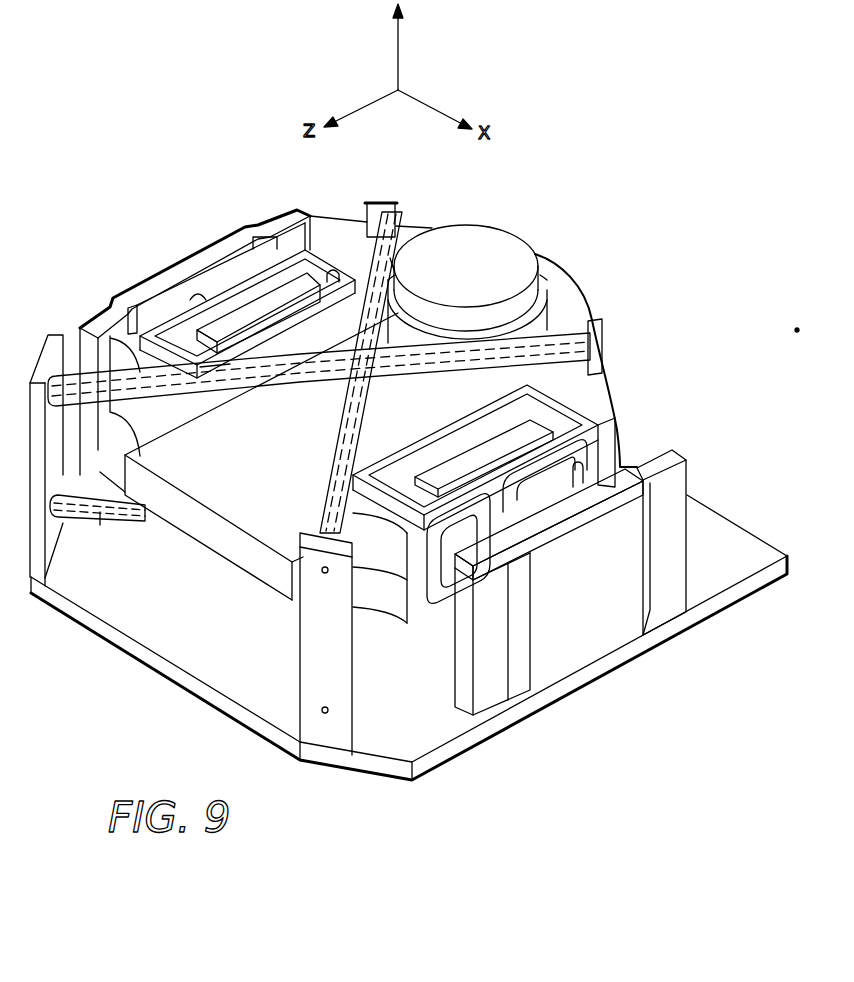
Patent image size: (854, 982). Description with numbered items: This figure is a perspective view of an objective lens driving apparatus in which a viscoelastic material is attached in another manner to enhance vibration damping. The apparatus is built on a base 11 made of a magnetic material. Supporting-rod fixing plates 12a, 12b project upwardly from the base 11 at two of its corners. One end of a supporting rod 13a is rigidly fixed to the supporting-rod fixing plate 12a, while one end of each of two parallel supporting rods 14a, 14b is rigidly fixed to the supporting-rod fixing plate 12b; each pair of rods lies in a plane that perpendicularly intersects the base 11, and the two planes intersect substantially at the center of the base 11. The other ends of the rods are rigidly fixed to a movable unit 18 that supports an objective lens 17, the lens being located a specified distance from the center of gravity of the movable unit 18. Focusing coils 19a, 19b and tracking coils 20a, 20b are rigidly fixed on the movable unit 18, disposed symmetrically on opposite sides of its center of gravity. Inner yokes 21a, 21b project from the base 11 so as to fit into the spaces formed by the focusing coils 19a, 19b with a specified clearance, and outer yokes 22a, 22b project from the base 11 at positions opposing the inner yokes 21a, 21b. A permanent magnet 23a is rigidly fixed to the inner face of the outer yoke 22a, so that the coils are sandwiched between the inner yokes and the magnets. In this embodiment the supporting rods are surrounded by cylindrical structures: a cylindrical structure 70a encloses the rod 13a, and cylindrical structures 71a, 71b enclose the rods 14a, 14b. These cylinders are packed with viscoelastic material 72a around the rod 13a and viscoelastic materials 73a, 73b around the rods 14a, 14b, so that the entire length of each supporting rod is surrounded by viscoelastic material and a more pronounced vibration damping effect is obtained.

The base 11 is at (425, 733).
The supporting-rod fixing plate 12a is at (303, 644).
The supporting-rod fixing plate 12b is at (40, 348).
The supporting rod 13a is at (348, 427).
The supporting rod 14a is at (292, 379).
The supporting rod 14b is at (149, 528).
The objective lens 17 is at (516, 236).
The movable unit 18 is at (568, 278).
The focusing coil 19a is at (582, 412).
The focusing coil 19b is at (316, 254).
The tracking coil 20a is at (594, 452).
The tracking coil 20b is at (248, 270).
The inner yoke 21a is at (460, 452).
The inner yoke 21b is at (218, 328).
The outer yoke 22a is at (596, 656).
The outer yoke 22b is at (205, 256).
The permanent magnet 23a is at (568, 512).
The cylindrical structure 70a is at (388, 205).
The cylindrical structure 71a is at (246, 404).
The cylindrical structure 71b is at (90, 530).
The viscoelastic material 72a is at (392, 261).
The viscoelastic material 73a is at (208, 385).
The viscoelastic material 73b is at (100, 530).